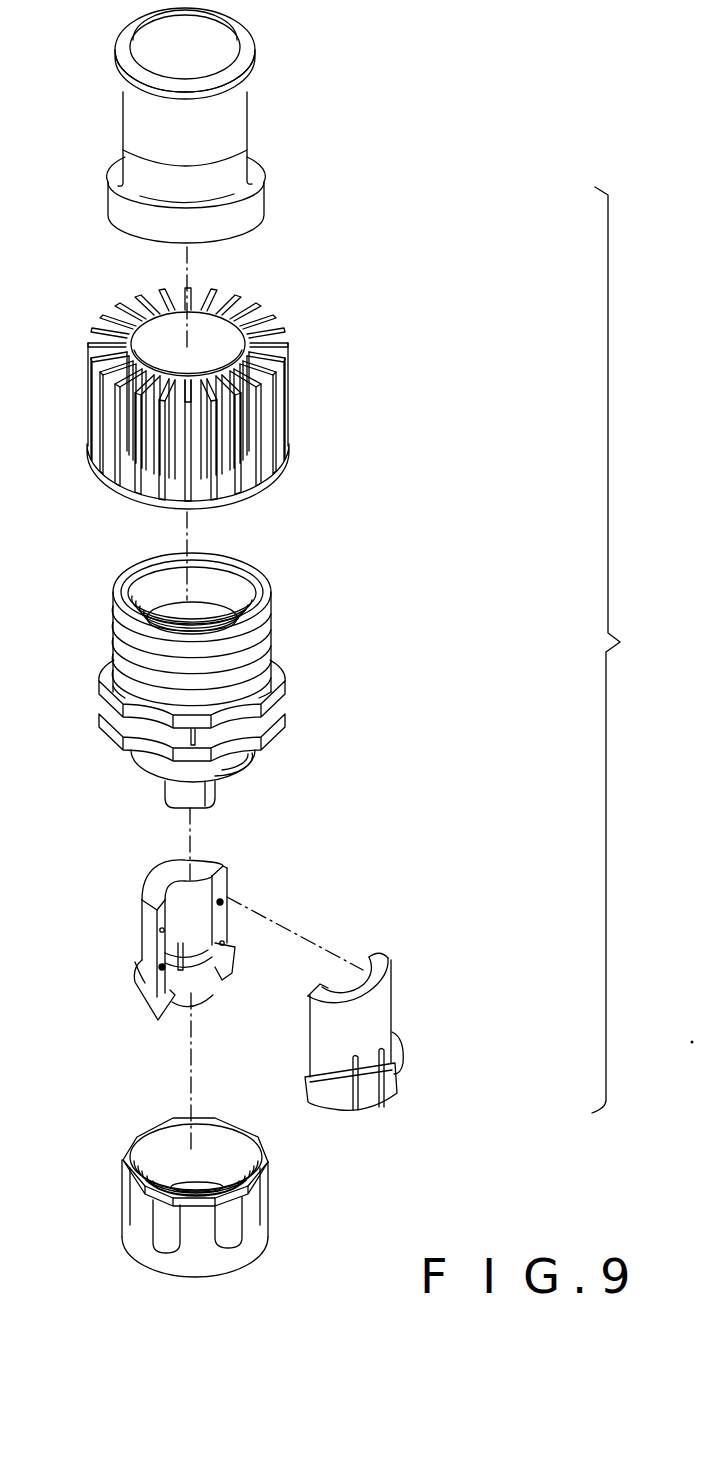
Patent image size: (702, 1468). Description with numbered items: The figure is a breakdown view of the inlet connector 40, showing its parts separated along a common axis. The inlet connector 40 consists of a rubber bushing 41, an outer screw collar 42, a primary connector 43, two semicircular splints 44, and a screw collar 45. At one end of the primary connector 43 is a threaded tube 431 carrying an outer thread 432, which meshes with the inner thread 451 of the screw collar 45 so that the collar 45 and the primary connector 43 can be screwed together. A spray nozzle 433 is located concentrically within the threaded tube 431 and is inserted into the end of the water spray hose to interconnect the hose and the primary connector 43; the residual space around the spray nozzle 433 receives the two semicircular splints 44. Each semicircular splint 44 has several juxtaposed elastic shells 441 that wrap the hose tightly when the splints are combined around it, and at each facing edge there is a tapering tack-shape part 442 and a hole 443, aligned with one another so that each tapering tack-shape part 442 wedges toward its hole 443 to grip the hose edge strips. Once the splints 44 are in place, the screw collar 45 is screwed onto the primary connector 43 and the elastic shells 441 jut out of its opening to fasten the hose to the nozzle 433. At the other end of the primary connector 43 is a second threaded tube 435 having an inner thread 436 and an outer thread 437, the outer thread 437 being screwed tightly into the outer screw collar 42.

The inlet connector 40 is at (623, 650).
The rubber bushing 41 is at (232, 123).
The outer screw collar 42 is at (290, 413).
The primary connector 43 is at (197, 682).
The threaded tube 431 is at (138, 766).
The outer thread 432 is at (247, 753).
The spray nozzle 433 is at (180, 797).
The threaded tube 435 is at (247, 572).
The inner thread 436 is at (147, 592).
The outer thread 437 is at (272, 633).
The semicircular splint 44 is at (257, 1022).
The elastic shell 441 is at (203, 970).
The tapering tack-shape part 442 is at (159, 967).
The hole 443 is at (159, 930).
The screw collar 45 is at (159, 1179).
The inner thread 451 is at (222, 1148).